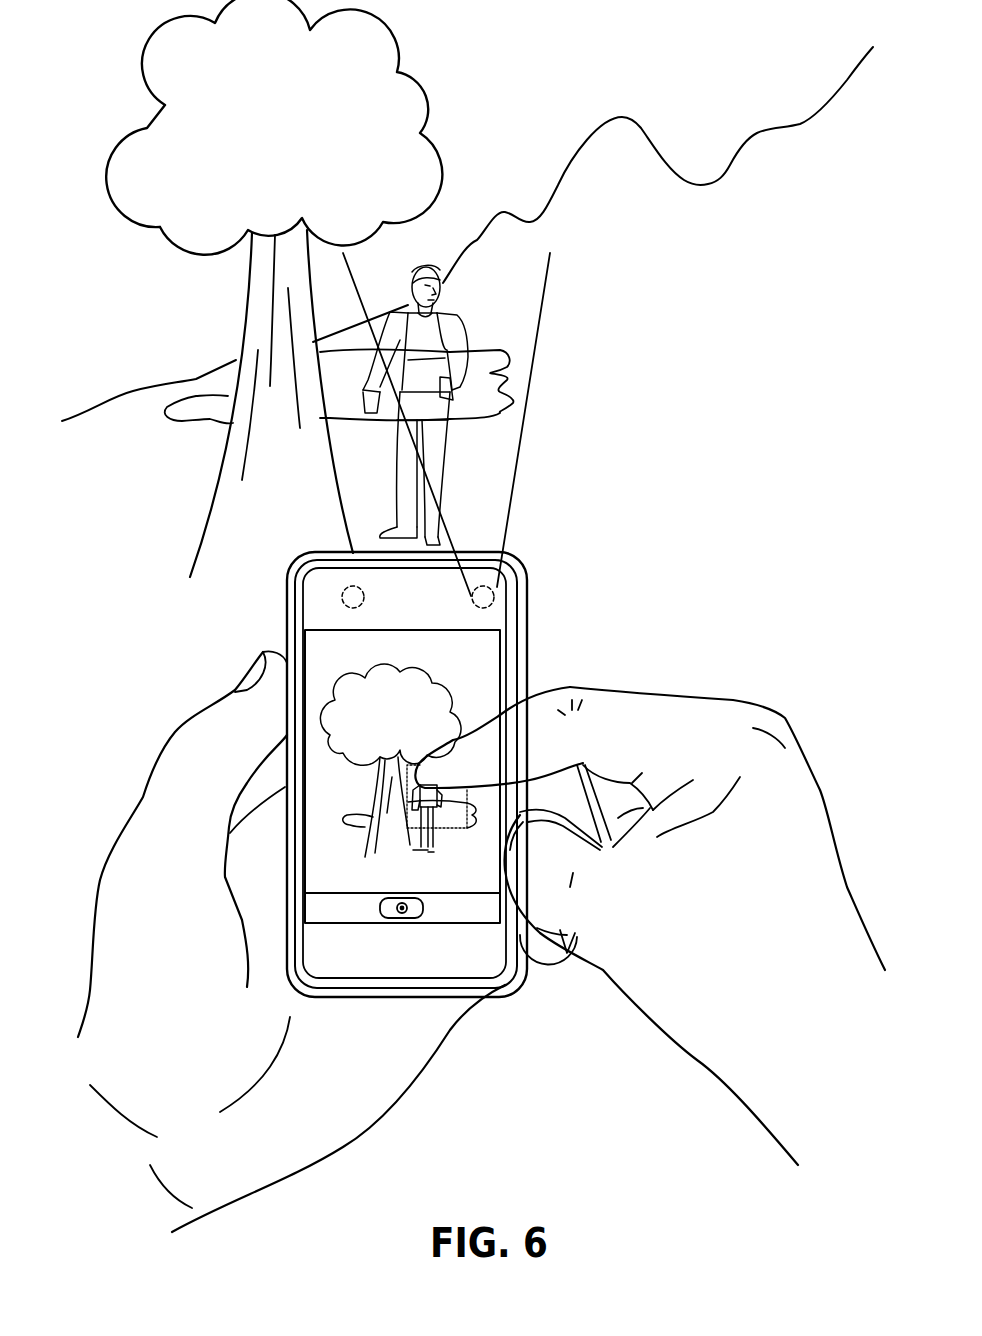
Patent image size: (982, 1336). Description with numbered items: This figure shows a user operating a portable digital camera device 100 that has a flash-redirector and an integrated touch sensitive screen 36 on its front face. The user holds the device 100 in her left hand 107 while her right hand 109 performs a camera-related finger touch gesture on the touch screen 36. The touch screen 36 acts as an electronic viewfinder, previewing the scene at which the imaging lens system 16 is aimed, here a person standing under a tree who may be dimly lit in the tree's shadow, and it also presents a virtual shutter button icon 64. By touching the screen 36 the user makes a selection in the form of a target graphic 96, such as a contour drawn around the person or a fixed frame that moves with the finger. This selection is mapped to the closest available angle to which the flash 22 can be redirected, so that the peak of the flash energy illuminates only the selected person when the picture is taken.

The digital camera device 100 is at (313, 560).
The imaging lens system 16 is at (345, 605).
The flash 22 is at (497, 583).
The touch sensitive screen 36 is at (483, 885).
The virtual shutter button icon 64 is at (378, 908).
The target graphic 96 is at (463, 830).
The left hand 107 is at (167, 785).
The right hand 109 is at (802, 750).